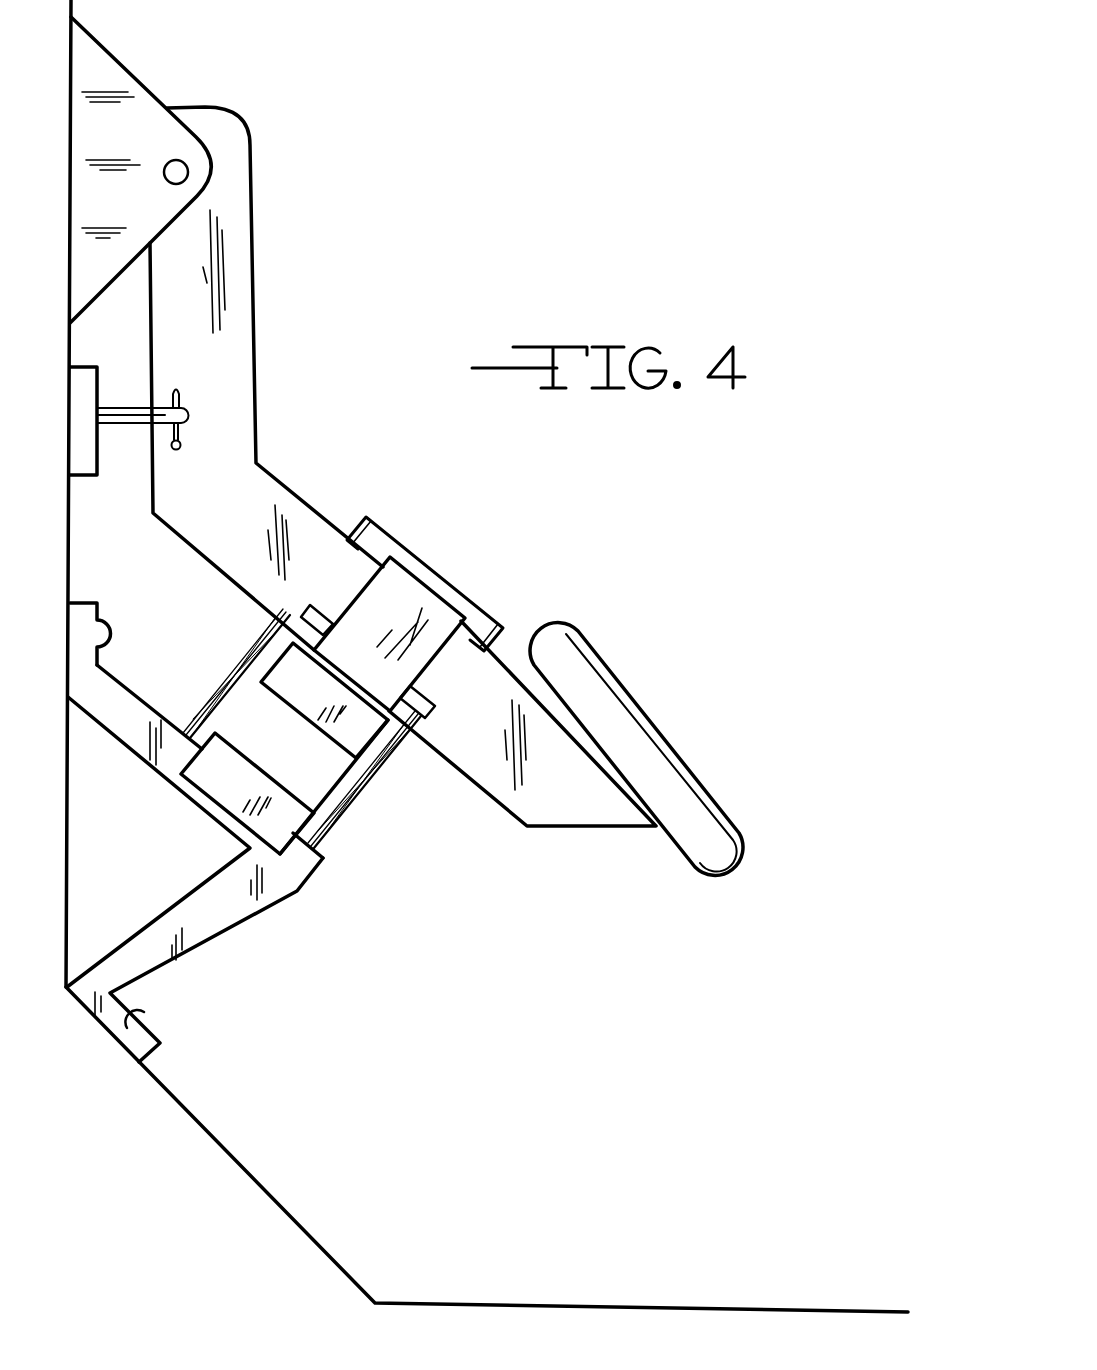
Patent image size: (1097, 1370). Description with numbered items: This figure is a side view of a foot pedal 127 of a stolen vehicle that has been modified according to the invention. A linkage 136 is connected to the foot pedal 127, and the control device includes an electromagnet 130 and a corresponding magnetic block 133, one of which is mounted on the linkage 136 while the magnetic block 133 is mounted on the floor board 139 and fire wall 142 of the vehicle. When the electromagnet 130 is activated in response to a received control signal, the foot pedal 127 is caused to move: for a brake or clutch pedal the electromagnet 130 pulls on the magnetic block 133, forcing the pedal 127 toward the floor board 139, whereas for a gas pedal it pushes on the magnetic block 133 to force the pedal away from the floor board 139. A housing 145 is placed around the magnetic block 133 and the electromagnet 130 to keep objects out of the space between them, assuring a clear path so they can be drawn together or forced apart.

The foot pedal 127 is at (719, 868).
The electromagnet 130 is at (335, 832).
The magnetic block 133 is at (397, 753).
The linkage 136 is at (305, 503).
The floor board 139 is at (259, 1183).
The fire wall 142 is at (67, 516).
The housing 145 is at (223, 687).